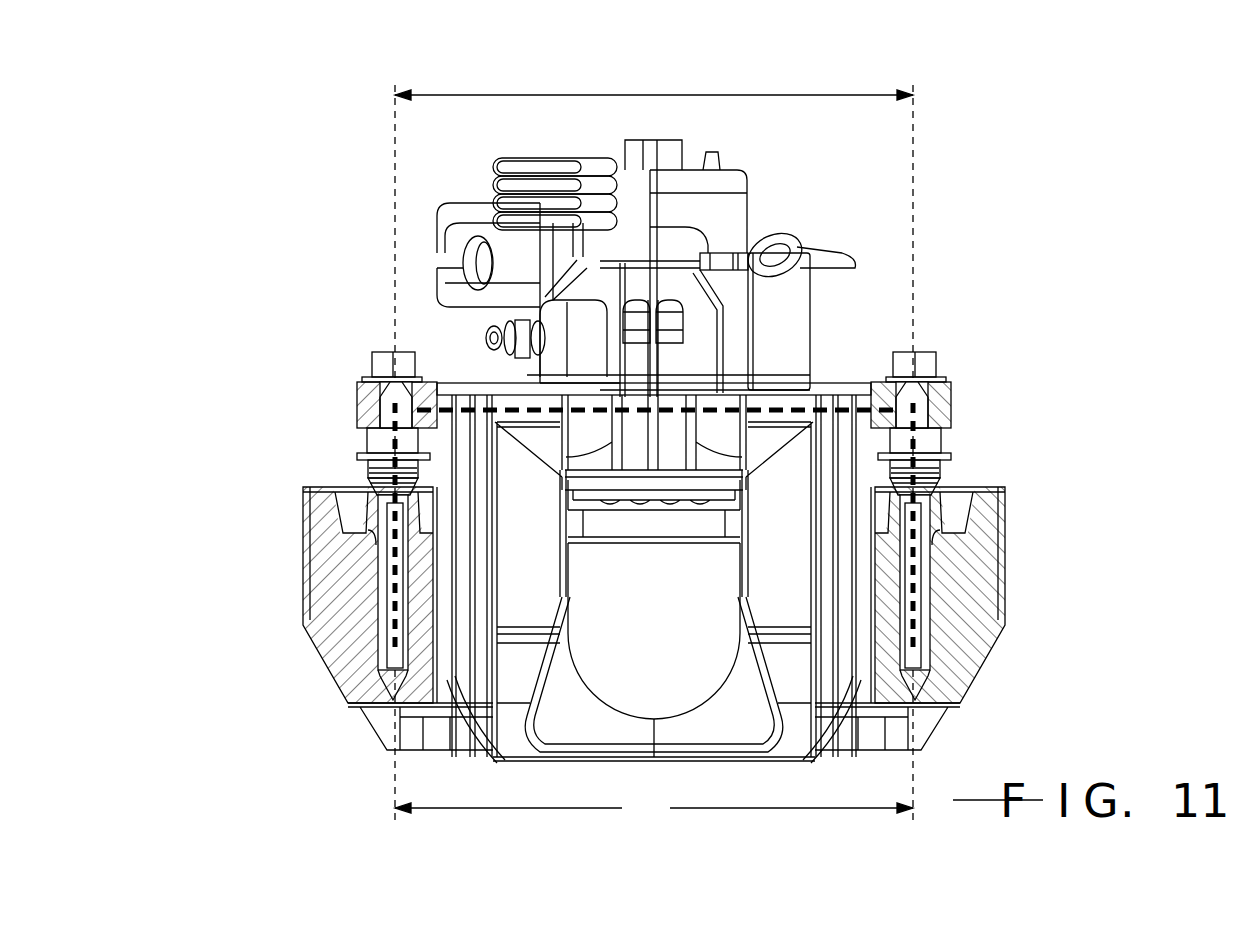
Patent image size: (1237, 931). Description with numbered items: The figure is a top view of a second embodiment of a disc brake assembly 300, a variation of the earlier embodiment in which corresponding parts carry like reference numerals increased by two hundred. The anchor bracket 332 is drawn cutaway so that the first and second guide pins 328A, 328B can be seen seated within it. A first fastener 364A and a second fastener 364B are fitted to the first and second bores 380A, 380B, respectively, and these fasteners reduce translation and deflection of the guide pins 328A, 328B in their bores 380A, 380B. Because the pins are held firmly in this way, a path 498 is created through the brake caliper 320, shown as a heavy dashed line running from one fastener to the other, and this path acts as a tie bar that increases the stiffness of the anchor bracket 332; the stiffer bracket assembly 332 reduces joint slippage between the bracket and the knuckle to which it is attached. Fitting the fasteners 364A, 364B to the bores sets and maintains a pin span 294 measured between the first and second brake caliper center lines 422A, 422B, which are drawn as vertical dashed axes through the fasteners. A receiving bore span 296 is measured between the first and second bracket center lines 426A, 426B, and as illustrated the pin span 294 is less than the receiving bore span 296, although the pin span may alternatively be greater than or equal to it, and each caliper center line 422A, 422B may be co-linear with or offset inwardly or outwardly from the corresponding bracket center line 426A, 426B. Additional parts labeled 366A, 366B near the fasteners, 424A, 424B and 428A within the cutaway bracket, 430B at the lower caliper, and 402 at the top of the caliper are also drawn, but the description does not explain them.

The disc brake assembly 300 is at (290, 262).
The pin span 294 is at (688, 92).
The receiving bore span 296 is at (654, 808).
The first brake caliper center line 422A is at (913, 160).
The second brake caliper center line 422B is at (395, 146).
The first fastener 364A is at (922, 348).
The second fastener 364B is at (378, 350).
The nut 366A is at (952, 387).
The nut 366B is at (358, 392).
The first bore 380A is at (932, 412).
The second bore 380B is at (373, 442).
The first guide pin 328A is at (915, 530).
The second guide pin 328B is at (387, 568).
The bushing 428A is at (985, 559).
The pin end 424A is at (920, 684).
The pin end 424B is at (393, 690).
The first bracket center line 426A is at (917, 722).
The second bracket center line 426B is at (393, 780).
The retaining hook 430B is at (487, 752).
The anchor bracket 332 is at (986, 595).
The brake caliper 320 is at (572, 712).
The bleeder valve 402 is at (810, 327).
The path 498 is at (463, 420).